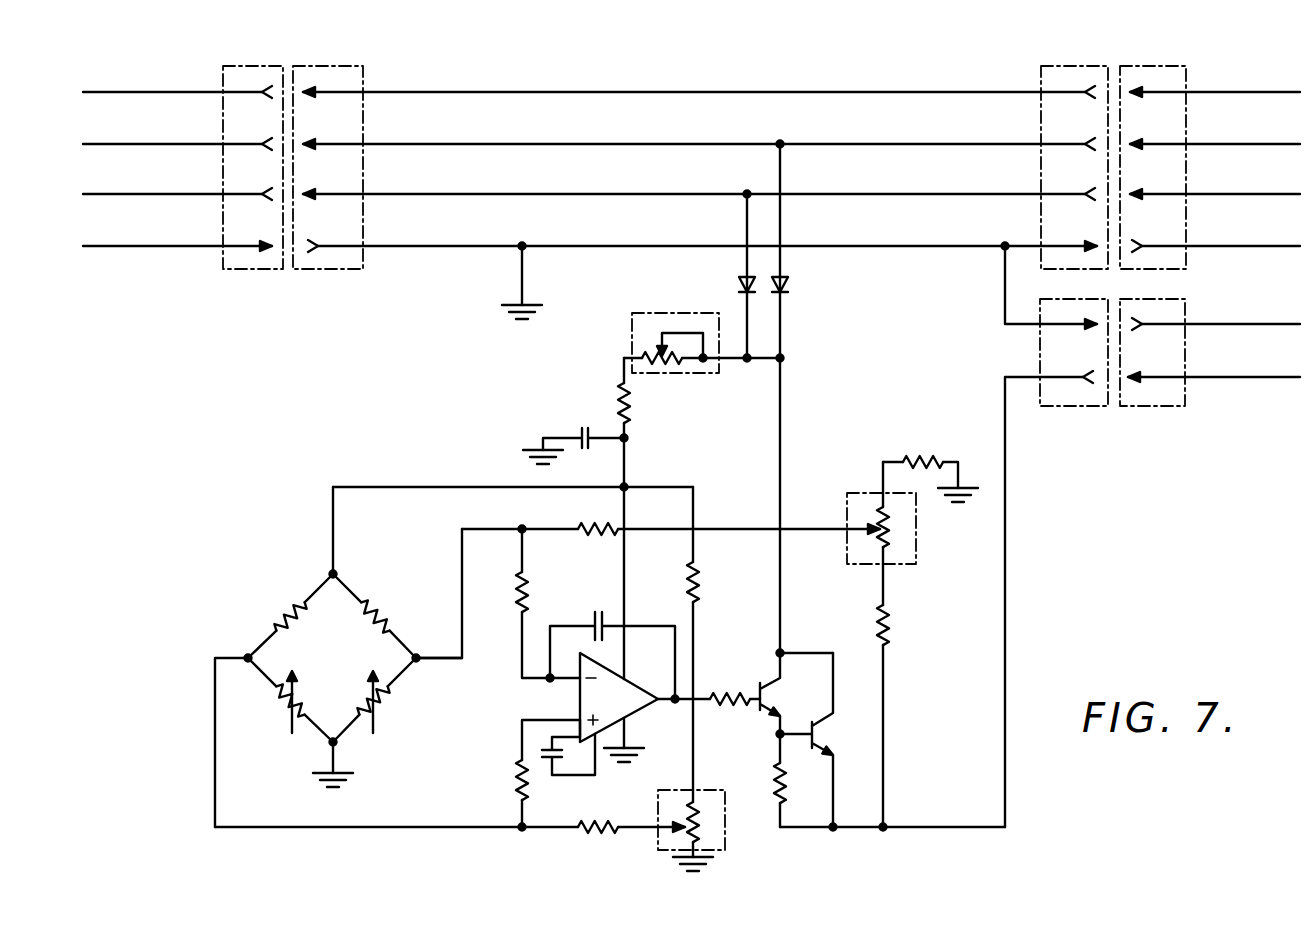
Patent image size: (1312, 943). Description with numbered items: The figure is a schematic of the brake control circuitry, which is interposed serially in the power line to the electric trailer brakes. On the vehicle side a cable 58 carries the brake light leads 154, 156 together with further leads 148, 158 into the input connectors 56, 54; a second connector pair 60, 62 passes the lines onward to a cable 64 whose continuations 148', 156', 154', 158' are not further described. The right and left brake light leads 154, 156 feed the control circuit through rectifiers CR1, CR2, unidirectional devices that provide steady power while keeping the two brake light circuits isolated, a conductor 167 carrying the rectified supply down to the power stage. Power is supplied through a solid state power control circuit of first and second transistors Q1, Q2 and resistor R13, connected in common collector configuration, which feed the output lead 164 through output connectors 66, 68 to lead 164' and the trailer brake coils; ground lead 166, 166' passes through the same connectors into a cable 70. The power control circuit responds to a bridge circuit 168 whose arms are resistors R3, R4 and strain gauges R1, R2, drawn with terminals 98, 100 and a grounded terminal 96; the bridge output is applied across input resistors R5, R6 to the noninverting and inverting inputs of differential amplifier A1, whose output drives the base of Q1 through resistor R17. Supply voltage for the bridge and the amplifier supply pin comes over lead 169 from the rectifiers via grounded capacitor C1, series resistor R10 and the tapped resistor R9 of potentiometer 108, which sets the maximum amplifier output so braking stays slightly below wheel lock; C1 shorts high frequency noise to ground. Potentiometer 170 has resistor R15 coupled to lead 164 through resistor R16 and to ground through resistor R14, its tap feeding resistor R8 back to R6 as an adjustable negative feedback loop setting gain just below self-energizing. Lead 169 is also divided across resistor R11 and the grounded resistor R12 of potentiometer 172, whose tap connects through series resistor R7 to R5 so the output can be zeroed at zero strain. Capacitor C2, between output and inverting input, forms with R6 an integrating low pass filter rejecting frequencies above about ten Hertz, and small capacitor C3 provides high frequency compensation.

The input cable 58 is at (177, 154).
The input connector 56 is at (256, 66).
The input connector 54 is at (322, 66).
The connector half 60 is at (1079, 66).
The connector half 62 is at (1167, 66).
The output cable 64 is at (1215, 160).
The supply conductor 148 is at (177, 102).
The left brake light lead 156 is at (177, 153).
The right brake light lead 154 is at (177, 203).
The ground conductor 158 is at (177, 258).
The supply conductor continuation 148' is at (1215, 109).
The supply conductor continuation 156' is at (1215, 159).
The supply conductor continuation 154' is at (1215, 209).
The ground conductor continuation 158' is at (1216, 260).
The ground lead 166 is at (1021, 296).
The output lead 164 is at (1019, 593).
The ground lead 166' is at (1216, 314).
The output lead 164' is at (1214, 367).
The output connector 66 is at (1080, 405).
The output connector 68 is at (1146, 406).
The output cable 70 is at (1214, 362).
The manually adjustable potentiometer 108 is at (690, 345).
The rectifier CR1 is at (740, 284).
The rectifier CR2 is at (794, 287).
The resistor of potentiometer R9 is at (668, 366).
The series resistor R10 is at (626, 406).
The grounded capacitor C1 is at (584, 426).
The lead 169 is at (624, 460).
The supply conductor 167 is at (780, 420).
The resistor R14 is at (910, 454).
The resistor of potentiometer R15 is at (888, 524).
The adjustable potentiometer 170 is at (917, 513).
The resistor R16 is at (888, 624).
The resistor R8 is at (580, 525).
The input resistor R6 is at (529, 596).
The capacitor C2 is at (595, 617).
The resistor R11 is at (692, 580).
The differential amplifier A1 is at (614, 624).
The first transistor Q1 is at (762, 682).
The resistor R17 is at (729, 702).
The second transistor Q2 is at (810, 724).
The resistor R13 is at (784, 786).
The grounded resistor of potentiometer R12 is at (701, 827).
The adjustable potentiometer 172 is at (679, 831).
The series resistor R7 is at (585, 822).
The input resistor R5 is at (518, 785).
The small capacitor C3 is at (556, 754).
The bridge circuit 168 is at (325, 657).
The resistor R4 is at (286, 623).
The resistor R3 is at (382, 617).
The strain gauge R1 is at (284, 702).
The strain gauge R2 is at (382, 698).
The bridge output terminal 98 is at (264, 681).
The bridge output terminal 100 is at (402, 669).
The bridge ground terminal 96 is at (333, 754).